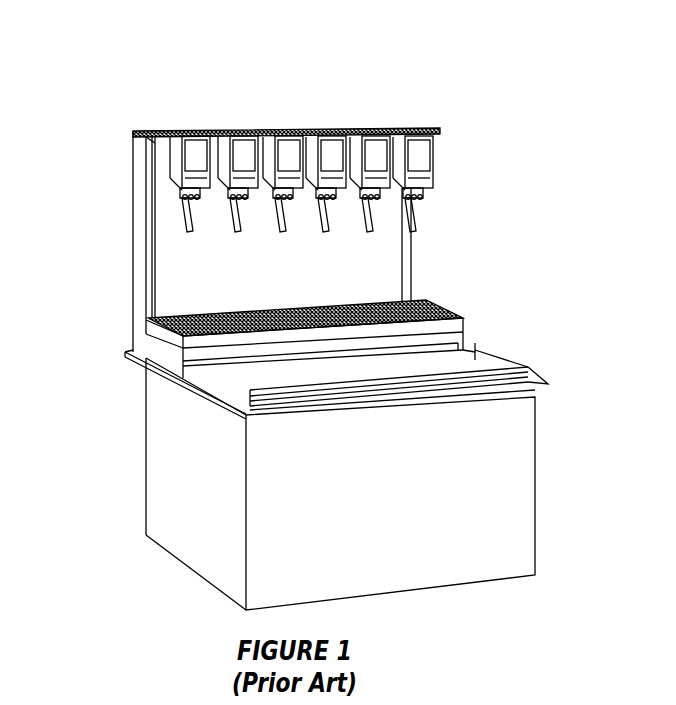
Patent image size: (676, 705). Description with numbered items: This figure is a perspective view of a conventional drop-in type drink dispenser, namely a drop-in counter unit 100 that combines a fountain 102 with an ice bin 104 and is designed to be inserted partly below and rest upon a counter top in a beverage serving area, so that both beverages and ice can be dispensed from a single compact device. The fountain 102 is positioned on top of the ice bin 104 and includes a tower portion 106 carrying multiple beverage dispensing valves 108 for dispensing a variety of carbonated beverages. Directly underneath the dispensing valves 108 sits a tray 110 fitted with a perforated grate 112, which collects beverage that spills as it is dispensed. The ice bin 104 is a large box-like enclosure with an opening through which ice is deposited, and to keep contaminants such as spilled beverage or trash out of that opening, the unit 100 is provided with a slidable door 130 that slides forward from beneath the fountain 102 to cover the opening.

The drop-in counter unit 100 is at (279, 48).
The fountain 102 is at (126, 222).
The ice bin 104 is at (140, 436).
The tower portion 106 is at (396, 256).
The beverage dispensing valves 108 is at (188, 131).
The tray 110 is at (188, 303).
The perforated grate 112 is at (431, 304).
The slidable door 130 is at (476, 346).